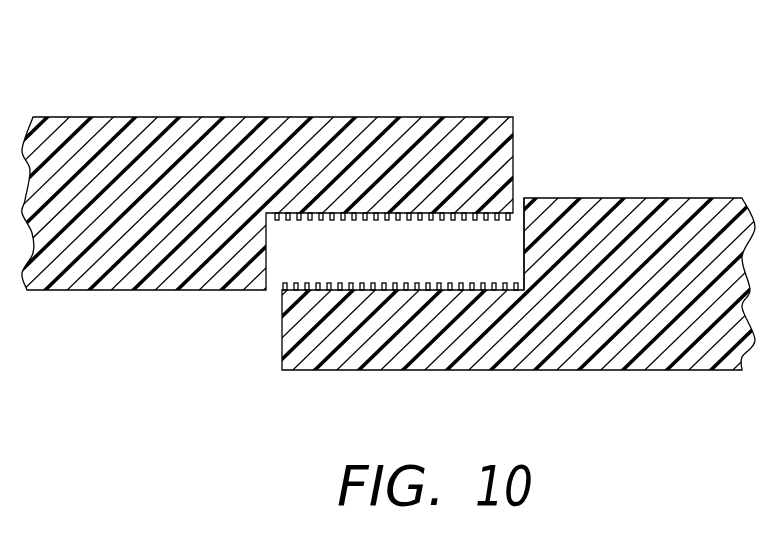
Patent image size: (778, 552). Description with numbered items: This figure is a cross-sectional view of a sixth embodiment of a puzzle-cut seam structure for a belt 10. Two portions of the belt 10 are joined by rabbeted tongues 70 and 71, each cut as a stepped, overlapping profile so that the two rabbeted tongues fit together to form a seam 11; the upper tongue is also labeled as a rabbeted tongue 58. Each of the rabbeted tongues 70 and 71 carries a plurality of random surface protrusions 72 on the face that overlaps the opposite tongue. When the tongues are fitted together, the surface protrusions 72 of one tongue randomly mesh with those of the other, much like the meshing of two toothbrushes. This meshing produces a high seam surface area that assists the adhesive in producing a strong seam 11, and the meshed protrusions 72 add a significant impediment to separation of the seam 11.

The belt 10 is at (389, 224).
The seam 11 is at (520, 197).
The rabbeted tongue 58 is at (389, 193).
The rabbeted tongue 70 is at (342, 145).
The rabbeted tongue 71 is at (408, 370).
The random surface protrusions 72 is at (396, 251).